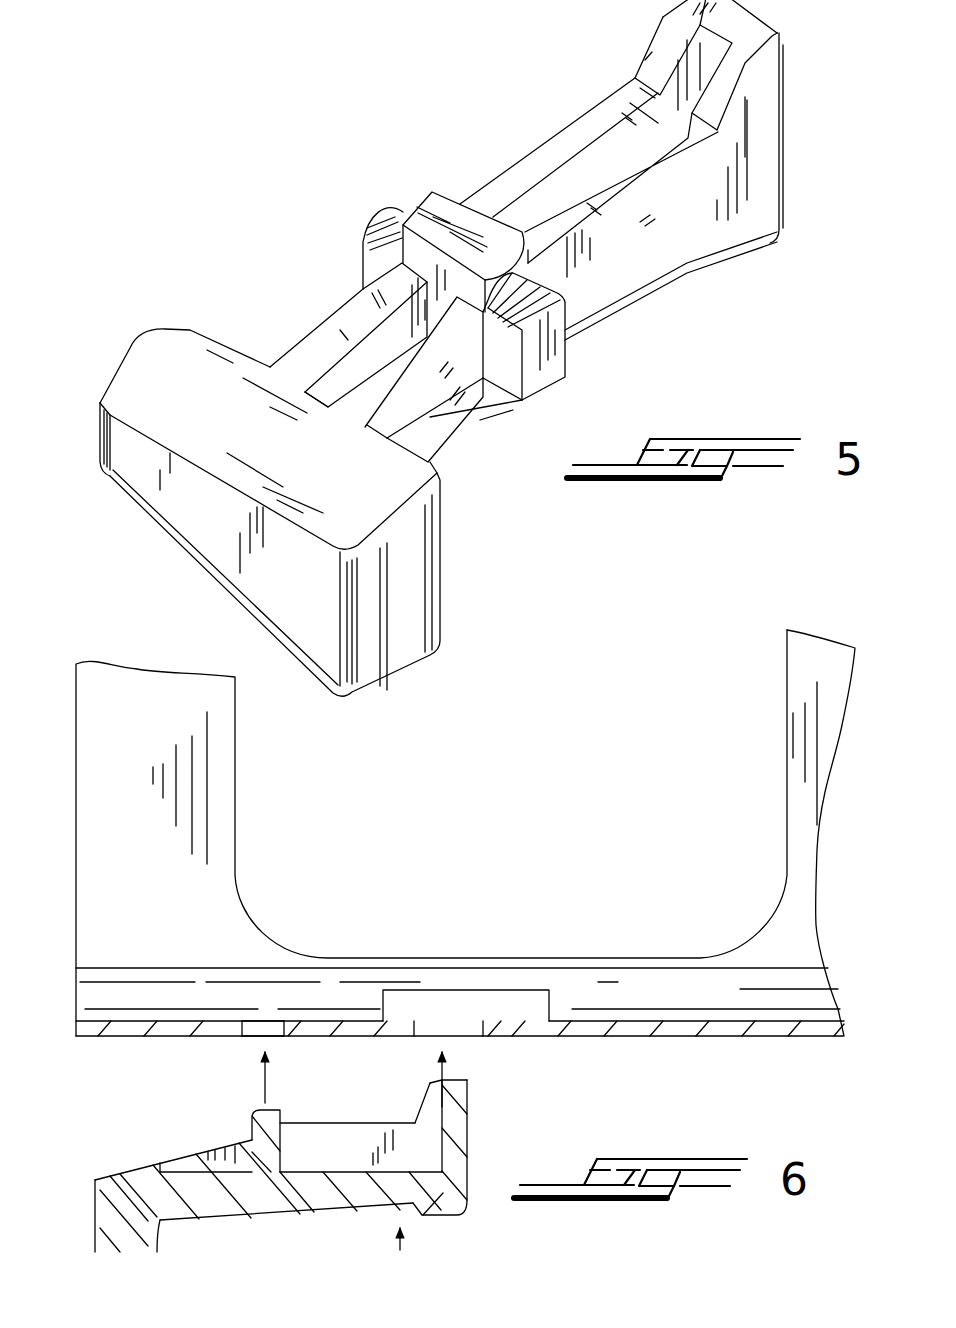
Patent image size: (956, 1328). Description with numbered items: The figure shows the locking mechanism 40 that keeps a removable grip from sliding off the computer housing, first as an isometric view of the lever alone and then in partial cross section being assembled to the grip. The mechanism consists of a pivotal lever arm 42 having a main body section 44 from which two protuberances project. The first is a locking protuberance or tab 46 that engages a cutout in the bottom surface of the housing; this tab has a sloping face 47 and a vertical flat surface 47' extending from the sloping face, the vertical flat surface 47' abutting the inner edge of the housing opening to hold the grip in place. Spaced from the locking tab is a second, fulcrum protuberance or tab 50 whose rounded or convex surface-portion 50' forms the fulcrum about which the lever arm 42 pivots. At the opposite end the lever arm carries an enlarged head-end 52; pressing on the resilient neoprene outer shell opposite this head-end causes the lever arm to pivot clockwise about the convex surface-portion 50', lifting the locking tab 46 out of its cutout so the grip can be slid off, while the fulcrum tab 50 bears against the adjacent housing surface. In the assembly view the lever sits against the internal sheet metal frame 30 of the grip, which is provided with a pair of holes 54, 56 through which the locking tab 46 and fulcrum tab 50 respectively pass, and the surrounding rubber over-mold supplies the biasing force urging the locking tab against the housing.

In FIG. 6, the internal sheet metal frame 30 is at (74, 726).
In FIG. 5, the locking mechanism 40 is at (414, 194).
In FIG. 5, the lever arm 42 is at (621, 294).
In FIG. 6, the lever arm 42 is at (245, 1216).
In FIG. 5, the main body section 44 is at (707, 227).
In FIG. 6, the main body section 44 is at (345, 1192).
In FIG. 5, the locking protuberance or tab 46 is at (783, 30).
In FIG. 6, the locking protuberance or tab 46 is at (462, 1107).
In FIG. 5, the sloping face 47 is at (655, 65).
In FIG. 6, the sloping face 47 is at (411, 1077).
In FIG. 5, the vertical flat surface 47' is at (593, 86).
In FIG. 6, the vertical flat surface 47' is at (369, 1094).
In FIG. 5, the fulcrum protuberance or tab 50 is at (484, 261).
In FIG. 6, the fulcrum protuberance or tab 50 is at (241, 1112).
In FIG. 5, the convex surface-portion 50' is at (342, 248).
In FIG. 5, the enlarged head-end 52 is at (290, 456).
In FIG. 6, the enlarged head-end 52 is at (95, 1180).
In FIG. 6, the hole 54 is at (430, 1040).
In FIG. 6, the hole 56 is at (264, 1030).